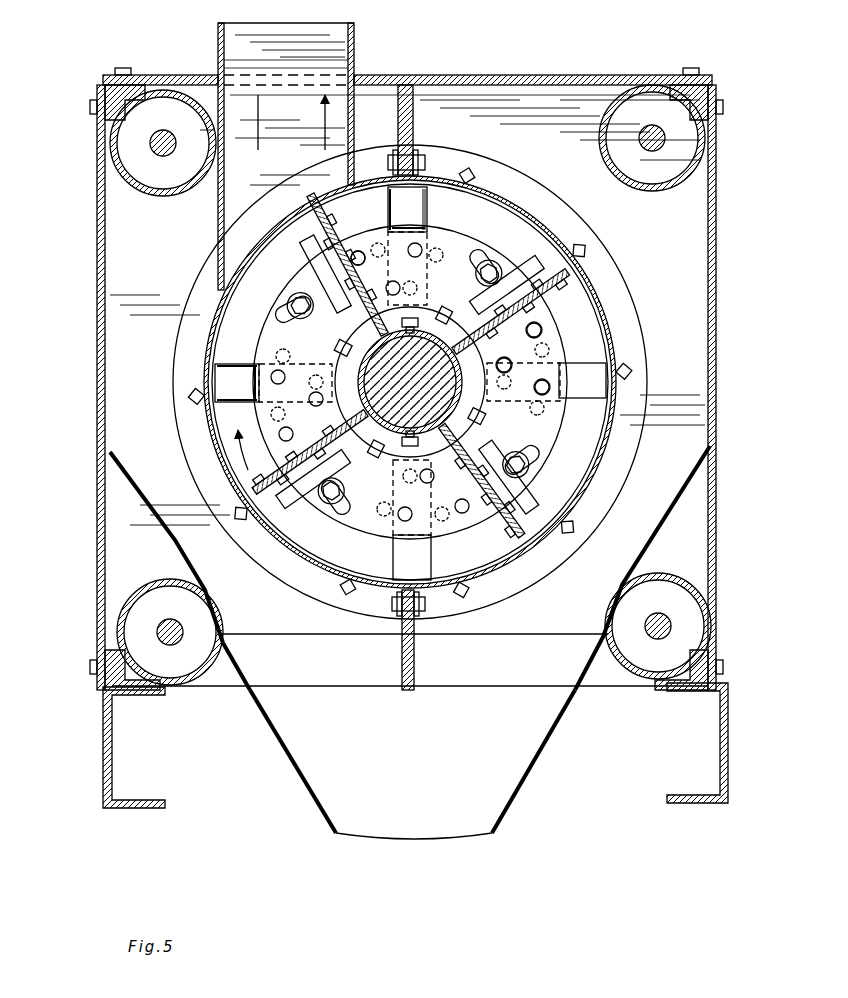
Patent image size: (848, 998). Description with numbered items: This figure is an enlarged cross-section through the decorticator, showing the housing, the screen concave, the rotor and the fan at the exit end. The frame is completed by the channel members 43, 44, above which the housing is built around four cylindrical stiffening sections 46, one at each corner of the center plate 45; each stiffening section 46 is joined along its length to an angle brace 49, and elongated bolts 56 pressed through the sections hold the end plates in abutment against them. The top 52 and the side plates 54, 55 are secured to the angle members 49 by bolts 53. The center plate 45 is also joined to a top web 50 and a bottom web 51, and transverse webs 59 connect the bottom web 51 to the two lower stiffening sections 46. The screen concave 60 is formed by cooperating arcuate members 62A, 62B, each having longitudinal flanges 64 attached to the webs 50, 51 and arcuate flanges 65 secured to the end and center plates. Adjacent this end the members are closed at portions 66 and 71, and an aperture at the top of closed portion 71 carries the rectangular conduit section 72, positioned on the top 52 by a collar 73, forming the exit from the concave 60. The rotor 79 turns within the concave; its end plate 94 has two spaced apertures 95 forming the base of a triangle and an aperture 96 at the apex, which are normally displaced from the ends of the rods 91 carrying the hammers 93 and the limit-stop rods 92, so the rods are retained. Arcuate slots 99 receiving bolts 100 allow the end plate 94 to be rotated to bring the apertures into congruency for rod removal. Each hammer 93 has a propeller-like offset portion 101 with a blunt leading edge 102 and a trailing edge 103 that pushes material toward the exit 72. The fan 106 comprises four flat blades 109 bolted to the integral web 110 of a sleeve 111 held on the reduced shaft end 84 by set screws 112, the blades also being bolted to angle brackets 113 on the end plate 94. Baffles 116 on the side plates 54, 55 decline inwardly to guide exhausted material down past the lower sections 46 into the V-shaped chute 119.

The channel member 43 is at (103, 755).
The channel member 44 is at (728, 742).
The center plate 45 is at (575, 173).
The cylindrical stiffening section 46 is at (112, 158).
The angle brace 49 is at (108, 112).
The top web 50 is at (410, 100).
The bottom web 51 is at (412, 680).
The top 52 is at (540, 74).
The bolt 53 is at (123, 68).
The side plate 54 is at (716, 225).
The side plate 55 is at (97, 246).
The elongated bolt 56 is at (150, 144).
The transverse web 59 is at (318, 669).
The screen concave 60 is at (596, 270).
The arcuate member 62A is at (205, 459).
The arcuate member 62B is at (612, 410).
The longitudinal flange 64 is at (393, 155).
The arcuate flange 65 is at (173, 367).
The closed portion 66 is at (606, 428).
The closed portion 71 is at (230, 470).
The conduit section 72 is at (354, 30).
The collar 73 is at (354, 52).
The rotor 79 is at (490, 530).
The reduced end portion 84 is at (385, 390).
The rod 91 is at (508, 365).
The rod 92 is at (550, 340).
The hammer 93 is at (422, 215).
The end plate 94 is at (517, 428).
The aperture 95 is at (541, 325).
The aperture 96 is at (504, 358).
The arcuate slot 99 is at (290, 310).
The bolt 100 is at (298, 290).
The offset portion 101 is at (255, 364).
The leading edge 102 is at (390, 209).
The trailing edge 103 is at (427, 209).
The fan 106 is at (262, 515).
The fan blade 109 is at (330, 225).
The integral web 110 is at (360, 268).
The sleeve 111 is at (355, 345).
The set screw 112 is at (418, 322).
The angle bracket 113 is at (318, 268).
The baffle 116 is at (185, 540).
The V-shaped chute 119 is at (550, 748).